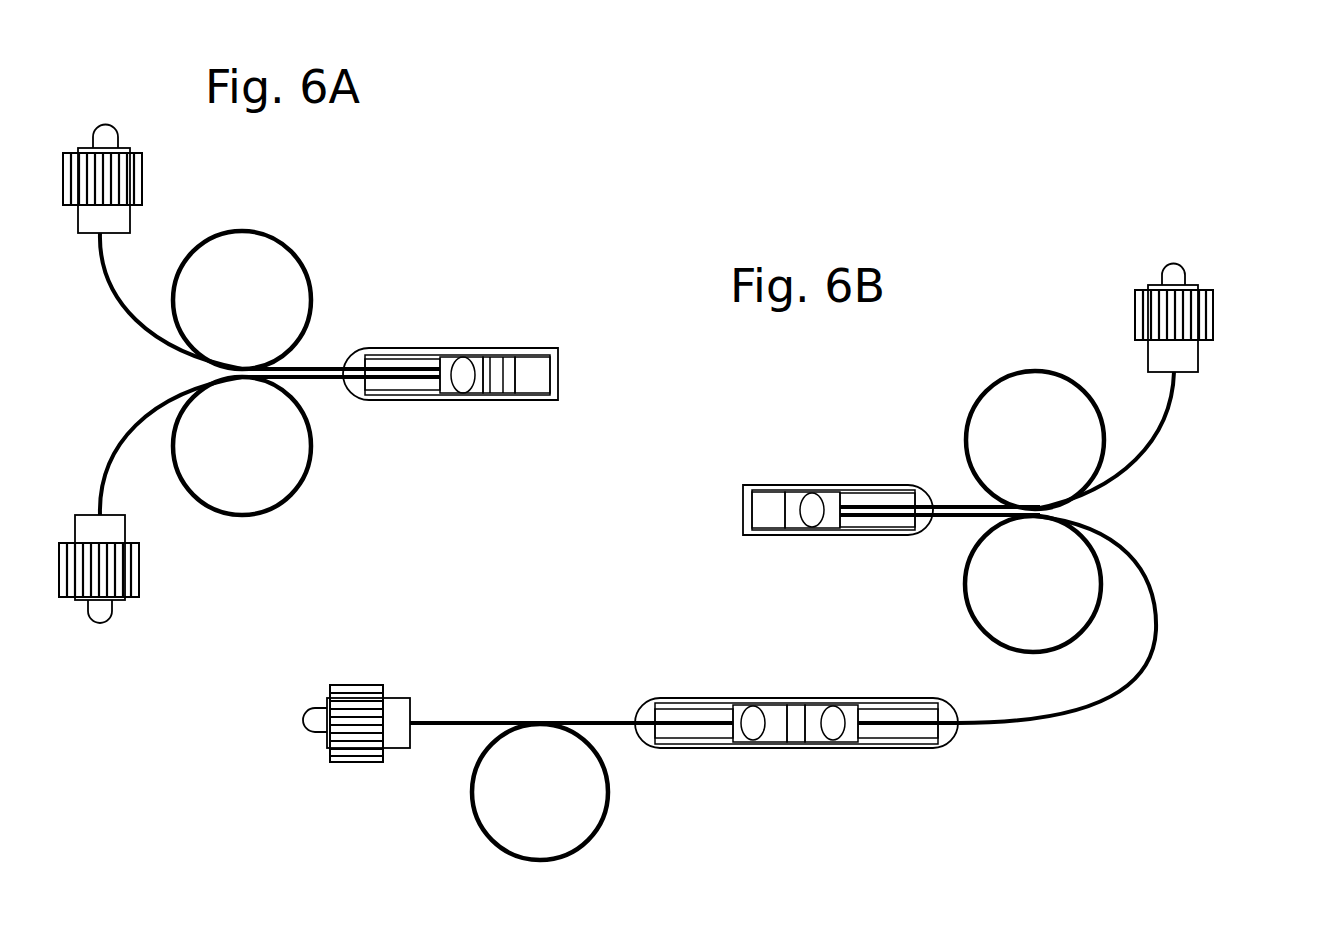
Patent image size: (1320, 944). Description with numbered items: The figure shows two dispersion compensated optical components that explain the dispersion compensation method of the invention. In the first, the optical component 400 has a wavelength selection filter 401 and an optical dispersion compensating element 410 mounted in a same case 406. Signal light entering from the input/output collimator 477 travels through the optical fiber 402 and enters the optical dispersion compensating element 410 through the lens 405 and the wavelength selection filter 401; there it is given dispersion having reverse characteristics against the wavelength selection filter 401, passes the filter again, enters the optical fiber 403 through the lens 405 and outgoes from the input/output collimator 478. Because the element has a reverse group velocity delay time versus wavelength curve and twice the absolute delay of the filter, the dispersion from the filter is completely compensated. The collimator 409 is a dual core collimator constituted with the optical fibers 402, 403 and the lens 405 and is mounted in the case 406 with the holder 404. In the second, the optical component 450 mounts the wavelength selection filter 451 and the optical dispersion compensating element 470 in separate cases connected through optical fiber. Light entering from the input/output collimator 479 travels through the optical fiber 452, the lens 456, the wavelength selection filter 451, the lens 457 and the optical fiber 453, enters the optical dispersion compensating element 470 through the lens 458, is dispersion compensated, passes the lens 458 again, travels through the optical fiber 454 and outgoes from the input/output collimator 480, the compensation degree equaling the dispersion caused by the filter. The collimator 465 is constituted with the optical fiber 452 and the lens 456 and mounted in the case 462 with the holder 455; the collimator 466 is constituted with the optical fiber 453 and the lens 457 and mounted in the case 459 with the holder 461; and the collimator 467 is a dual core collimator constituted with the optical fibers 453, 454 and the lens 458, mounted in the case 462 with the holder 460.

In FIG. 6A, the dispersion compensated optical component 400 is at (365, 181).
In FIG. 6A, the wavelength selection filter 401 is at (492, 352).
In FIG. 6A, the optical fiber 402 is at (325, 380).
In FIG. 6A, the optical fiber 403 is at (340, 381).
In FIG. 6A, the holder 404 is at (390, 352).
In FIG. 6A, the lens 405 is at (465, 394).
In FIG. 6A, the case 406 is at (437, 355).
In FIG. 6A, the collimator 409 is at (408, 403).
In FIG. 6A, the optical dispersion compensating element 410 is at (540, 352).
In FIG. 6B, the dispersion compensated optical component 450 is at (963, 292).
In FIG. 6B, the wavelength selection filter 451 is at (795, 705).
In FIG. 6B, the optical fiber 452 is at (618, 726).
In FIG. 6B, the optical fiber 453 is at (865, 493).
In FIG. 6B, the optical fiber 454 is at (905, 495).
In FIG. 6B, the holder 455 is at (688, 709).
In FIG. 6B, the lens 456 is at (750, 730).
In FIG. 6B, the lens 457 is at (830, 730).
In FIG. 6B, the lens 458 is at (812, 491).
In FIG. 6B, the case 459 is at (735, 700).
In FIG. 6B, the holder 460 is at (865, 535).
In FIG. 6B, the holder 461 is at (890, 709).
In FIG. 6B, the case 462 is at (790, 535).
In FIG. 6B, the collimator 465 is at (598, 759).
In FIG. 6B, the collimator 466 is at (882, 760).
In FIG. 6B, the collimator 467 is at (891, 490).
In FIG. 6B, the optical dispersion compensating element 470 is at (768, 493).
In FIG. 6A, the input/output collimator 477 is at (142, 178).
In FIG. 6A, the input/output collimator 478 is at (139, 572).
In FIG. 6B, the input/output collimator 479 is at (352, 762).
In FIG. 6B, the input/output collimator 480 is at (1213, 313).